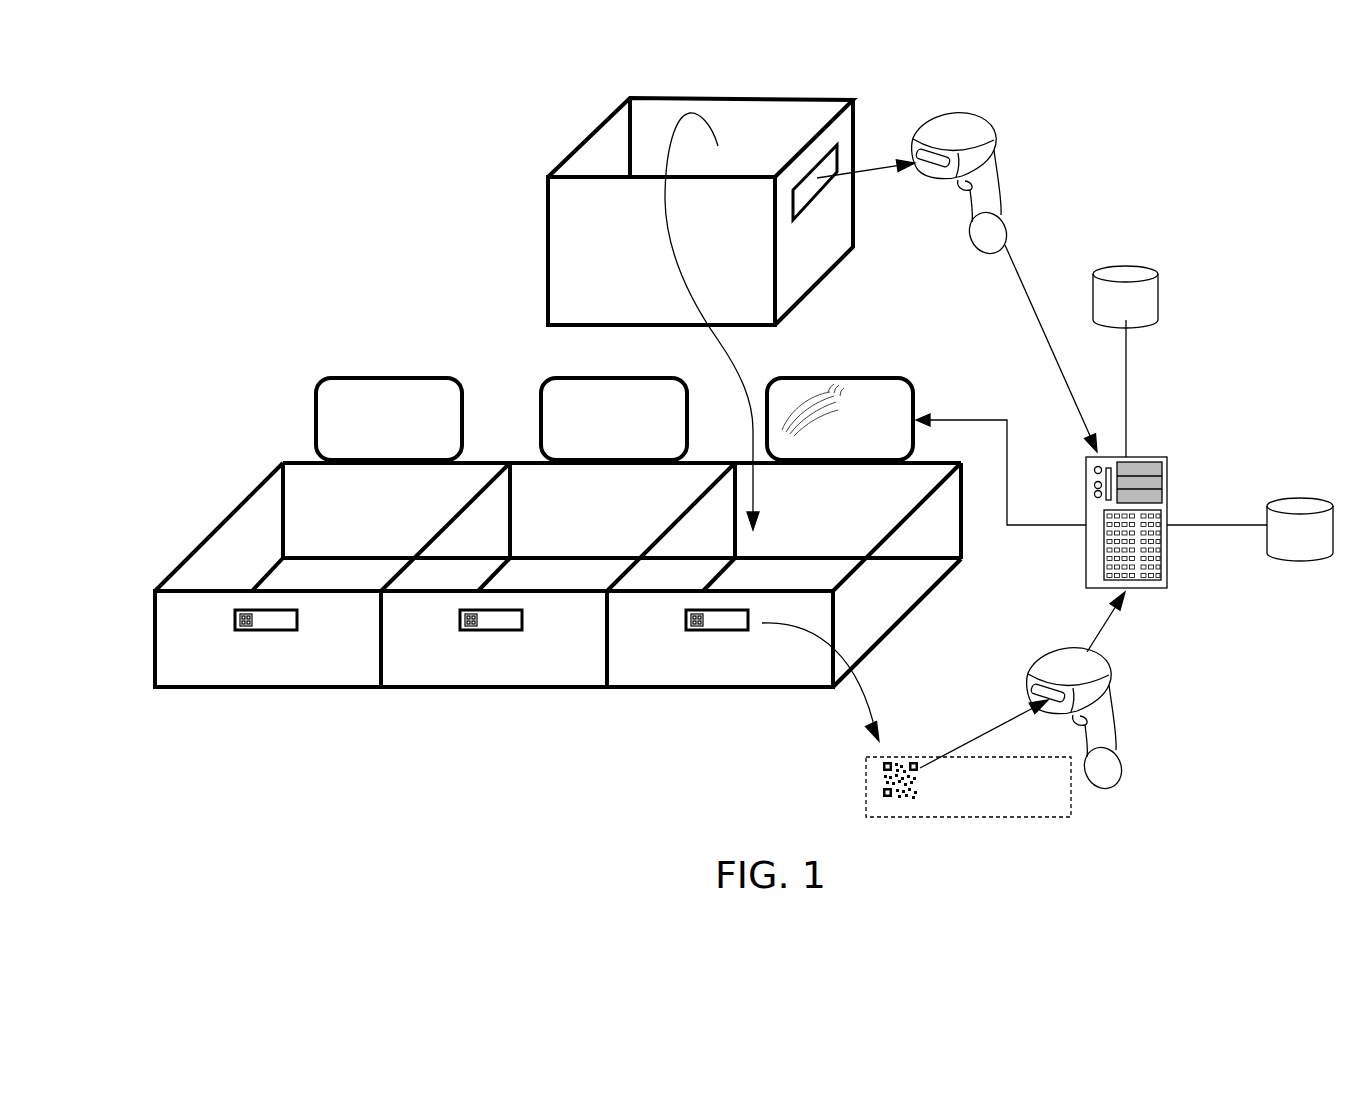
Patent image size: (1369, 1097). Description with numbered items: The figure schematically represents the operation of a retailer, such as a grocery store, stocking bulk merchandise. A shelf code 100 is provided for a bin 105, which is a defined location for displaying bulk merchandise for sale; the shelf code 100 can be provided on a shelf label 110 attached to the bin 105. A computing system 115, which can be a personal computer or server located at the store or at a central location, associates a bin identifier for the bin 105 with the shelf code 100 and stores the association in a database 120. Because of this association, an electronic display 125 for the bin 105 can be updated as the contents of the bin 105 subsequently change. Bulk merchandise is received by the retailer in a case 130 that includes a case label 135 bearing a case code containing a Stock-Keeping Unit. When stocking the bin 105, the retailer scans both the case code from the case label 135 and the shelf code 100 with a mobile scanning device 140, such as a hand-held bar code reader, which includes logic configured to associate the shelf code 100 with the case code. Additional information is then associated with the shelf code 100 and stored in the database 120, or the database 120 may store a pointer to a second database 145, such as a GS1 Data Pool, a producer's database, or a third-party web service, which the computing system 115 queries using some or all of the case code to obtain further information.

The shelf code 100 is at (901, 768).
The bin 105 is at (878, 514).
The shelf label 110 is at (277, 620).
The computing system 115 is at (1154, 457).
The database 120 is at (1111, 315).
The electronic display 125 is at (863, 378).
The case 130 is at (548, 221).
The case label 135 is at (808, 192).
The mobile scanning device 140 is at (997, 136).
The second database 145 is at (1285, 547).